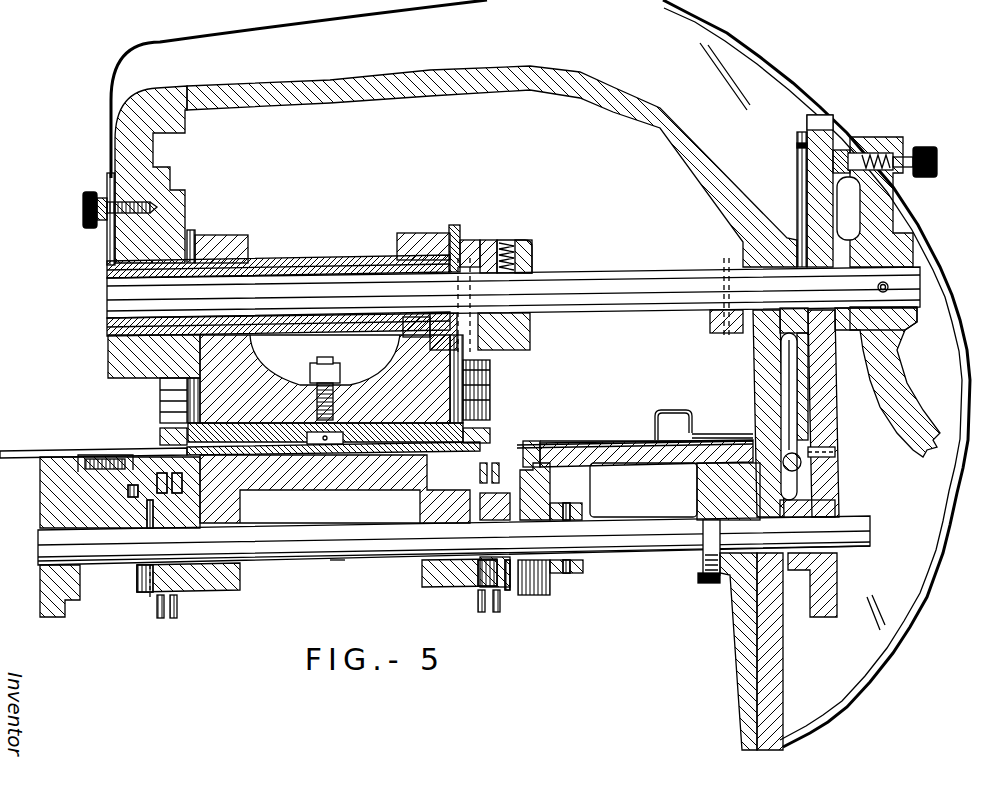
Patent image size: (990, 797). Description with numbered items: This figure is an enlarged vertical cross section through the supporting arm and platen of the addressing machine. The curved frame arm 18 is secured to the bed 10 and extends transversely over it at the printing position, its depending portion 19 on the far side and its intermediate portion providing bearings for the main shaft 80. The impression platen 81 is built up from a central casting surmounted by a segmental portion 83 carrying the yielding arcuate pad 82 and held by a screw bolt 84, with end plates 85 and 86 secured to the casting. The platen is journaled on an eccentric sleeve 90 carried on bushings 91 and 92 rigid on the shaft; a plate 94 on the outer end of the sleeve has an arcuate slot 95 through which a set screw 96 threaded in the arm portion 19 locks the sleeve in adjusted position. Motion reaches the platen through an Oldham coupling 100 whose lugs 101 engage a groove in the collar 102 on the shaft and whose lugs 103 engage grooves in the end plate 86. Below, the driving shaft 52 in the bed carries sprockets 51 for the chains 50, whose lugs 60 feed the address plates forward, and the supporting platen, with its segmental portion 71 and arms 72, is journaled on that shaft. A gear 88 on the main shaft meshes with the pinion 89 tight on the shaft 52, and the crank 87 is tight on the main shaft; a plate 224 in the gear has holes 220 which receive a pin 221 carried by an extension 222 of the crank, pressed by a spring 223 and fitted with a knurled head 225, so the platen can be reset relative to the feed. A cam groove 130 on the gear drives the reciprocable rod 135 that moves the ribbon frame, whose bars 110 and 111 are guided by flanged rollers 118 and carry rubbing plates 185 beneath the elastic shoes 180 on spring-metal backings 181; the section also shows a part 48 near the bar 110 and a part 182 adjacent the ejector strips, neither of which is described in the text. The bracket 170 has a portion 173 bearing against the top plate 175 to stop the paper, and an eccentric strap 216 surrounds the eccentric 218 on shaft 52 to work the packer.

The bed 10 is at (42, 482).
The curved frame arm 18 is at (540, 373).
The depending portion of the arm 19 is at (118, 160).
The bracket insert 48 is at (78, 463).
The sprocket chains 50 is at (130, 491).
The sprockets 51 is at (147, 513).
The driving shaft 52 is at (332, 565).
The upstanding lugs 60 is at (157, 487).
The segmental portion 71 is at (454, 549).
The arms 72 is at (242, 582).
The main shaft 80 is at (620, 277).
The impression platen 81 is at (396, 366).
The yielding arcuate pad 82 is at (463, 420).
The segmental portion 83 is at (357, 428).
The screw bolt 84 is at (317, 367).
The end plate 85 is at (197, 232).
The end plate 86 is at (455, 225).
The crank 87 is at (898, 362).
The gear 88 is at (807, 188).
The pinion 89 is at (818, 529).
The eccentric sleeve 90 is at (372, 258).
The bushing 91 is at (224, 277).
The bushing 92 is at (372, 275).
The plate 94 is at (107, 256).
The arcuate slot 95 is at (100, 220).
The set screw 96 is at (83, 210).
The Oldham coupling 100 is at (472, 240).
The diametric lugs 101 is at (497, 240).
The collar 102 is at (534, 258).
The lugs 103 is at (455, 295).
The parallel bar 110 is at (130, 451).
The parallel bar 111 is at (541, 442).
The flanged rollers 118 is at (608, 460).
The cam groove 130 is at (797, 153).
The reciprocable rod 135 is at (800, 455).
The sheet metal bracket 170 is at (705, 430).
The downwardly extending portion 173 is at (652, 422).
The top plate 175 is at (55, 450).
The elastic shoes 180 is at (160, 434).
The spring-metal backings 181 is at (476, 430).
The block 182 is at (160, 420).
The rubbing plates 185 is at (130, 447).
The eccentric strap 216 is at (545, 593).
The eccentric 218 is at (552, 490).
The holes 220 is at (867, 135).
The pin 221 is at (897, 160).
The extension 222 is at (895, 218).
The spring 223 is at (905, 172).
The plate 224 is at (860, 148).
The knurled head 225 is at (938, 161).